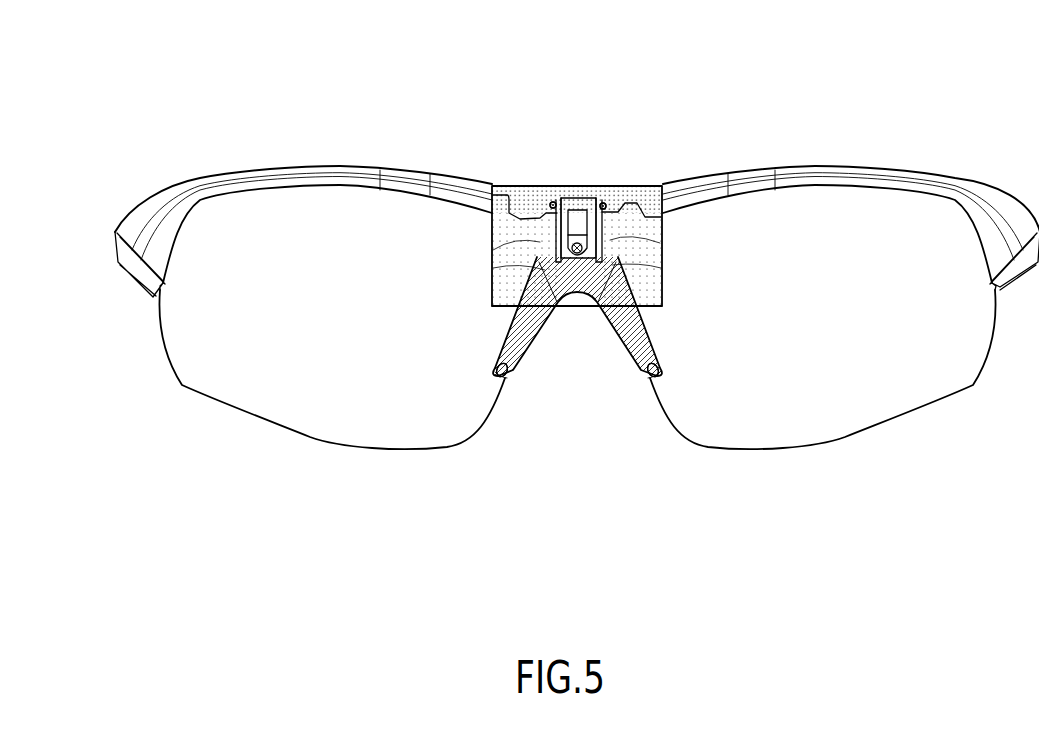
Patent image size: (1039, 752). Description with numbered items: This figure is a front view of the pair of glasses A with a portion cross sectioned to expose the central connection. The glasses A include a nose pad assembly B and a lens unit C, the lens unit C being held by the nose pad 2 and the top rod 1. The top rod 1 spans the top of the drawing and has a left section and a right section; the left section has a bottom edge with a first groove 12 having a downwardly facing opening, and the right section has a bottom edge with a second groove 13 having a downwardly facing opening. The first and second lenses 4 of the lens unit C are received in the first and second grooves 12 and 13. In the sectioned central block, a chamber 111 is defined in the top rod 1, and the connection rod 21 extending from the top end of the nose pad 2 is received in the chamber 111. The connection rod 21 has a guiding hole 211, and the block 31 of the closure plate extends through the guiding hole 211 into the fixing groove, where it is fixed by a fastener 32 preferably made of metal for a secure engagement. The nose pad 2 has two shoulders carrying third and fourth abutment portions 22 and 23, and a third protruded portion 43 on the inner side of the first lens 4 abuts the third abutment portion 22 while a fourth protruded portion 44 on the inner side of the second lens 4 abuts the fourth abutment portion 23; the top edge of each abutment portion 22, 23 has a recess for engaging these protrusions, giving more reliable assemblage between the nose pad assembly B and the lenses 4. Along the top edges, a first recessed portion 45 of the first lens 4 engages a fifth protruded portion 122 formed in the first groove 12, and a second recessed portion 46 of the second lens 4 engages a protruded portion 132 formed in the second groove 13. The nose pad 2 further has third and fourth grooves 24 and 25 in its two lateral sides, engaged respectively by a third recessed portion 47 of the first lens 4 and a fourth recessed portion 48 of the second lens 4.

The glasses A is at (272, 137).
The top rod 1 is at (342, 162).
The lens unit C is at (227, 431).
The lens 4 is at (298, 437).
The fourth abutment portion 23 is at (395, 200).
The third abutment portion 22 is at (763, 200).
The fourth protruded portion 44 is at (432, 200).
The third protruded portion 43 is at (732, 200).
The nose pad assembly B is at (580, 197).
The second groove 13 is at (500, 198).
The first groove 12 is at (657, 198).
The second recessed portion 46 is at (523, 197).
The screw hole 132 is at (512, 124).
The first recessed portion 45 is at (637, 197).
The fifth protruded portion 122 is at (657, 122).
The chamber 111 is at (553, 197).
The connection rod 21 is at (622, 197).
The guiding hole 211 is at (617, 197).
The nose pad 2 is at (573, 295).
The block 31 is at (533, 322).
The fastener 32 is at (615, 320).
The fourth recessed portion 48 is at (520, 372).
The fourth groove 25 is at (461, 451).
The third recessed portion 47 is at (637, 372).
The third groove 24 is at (699, 451).